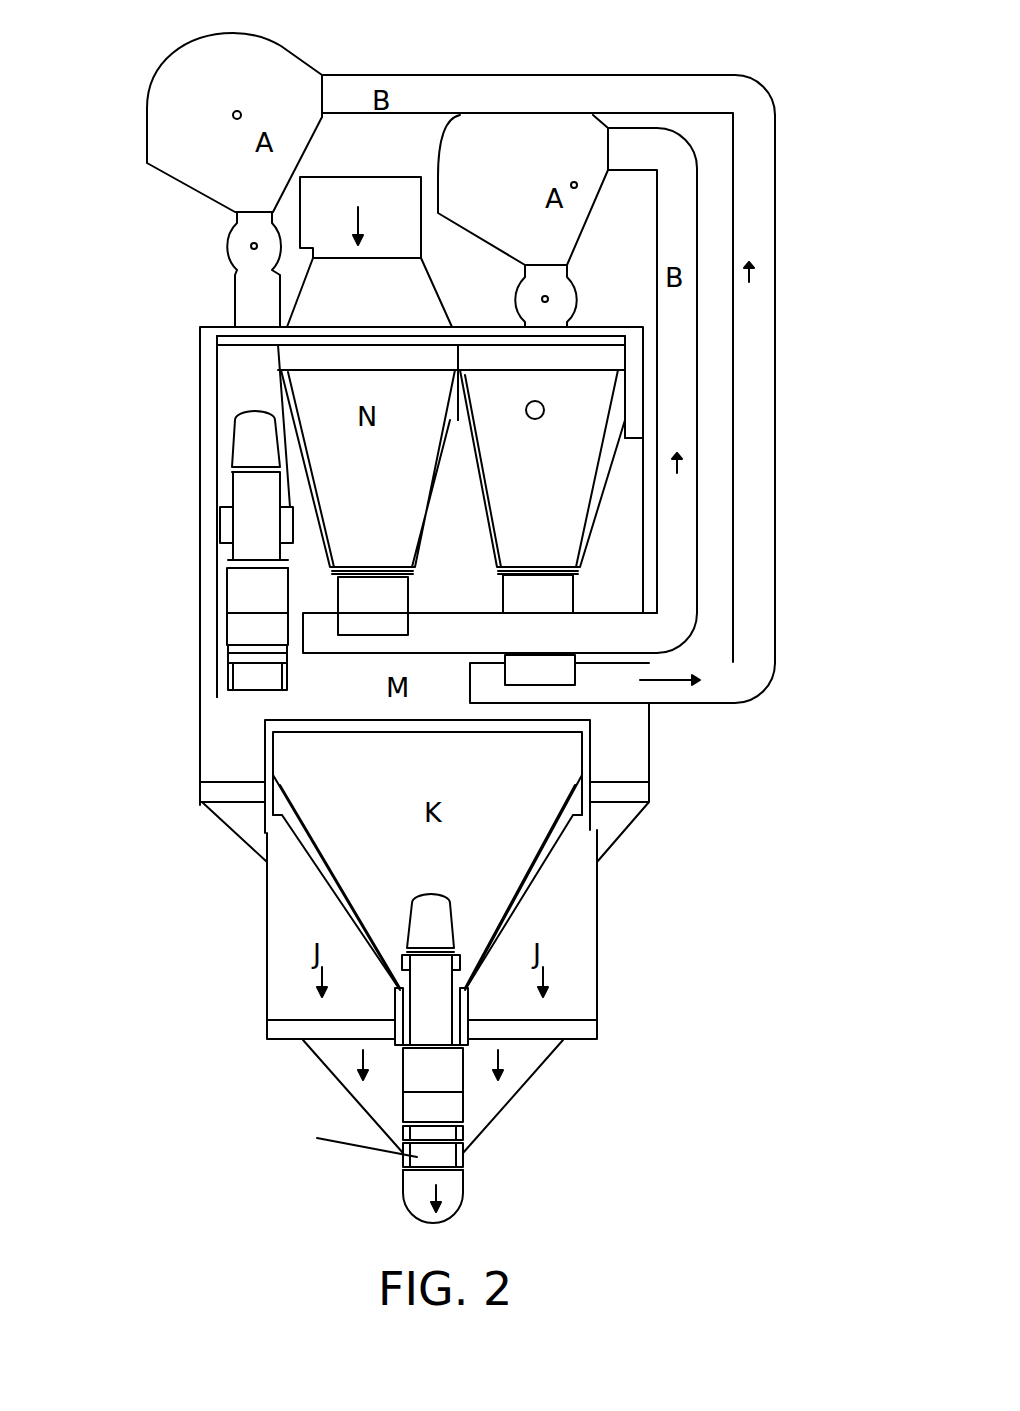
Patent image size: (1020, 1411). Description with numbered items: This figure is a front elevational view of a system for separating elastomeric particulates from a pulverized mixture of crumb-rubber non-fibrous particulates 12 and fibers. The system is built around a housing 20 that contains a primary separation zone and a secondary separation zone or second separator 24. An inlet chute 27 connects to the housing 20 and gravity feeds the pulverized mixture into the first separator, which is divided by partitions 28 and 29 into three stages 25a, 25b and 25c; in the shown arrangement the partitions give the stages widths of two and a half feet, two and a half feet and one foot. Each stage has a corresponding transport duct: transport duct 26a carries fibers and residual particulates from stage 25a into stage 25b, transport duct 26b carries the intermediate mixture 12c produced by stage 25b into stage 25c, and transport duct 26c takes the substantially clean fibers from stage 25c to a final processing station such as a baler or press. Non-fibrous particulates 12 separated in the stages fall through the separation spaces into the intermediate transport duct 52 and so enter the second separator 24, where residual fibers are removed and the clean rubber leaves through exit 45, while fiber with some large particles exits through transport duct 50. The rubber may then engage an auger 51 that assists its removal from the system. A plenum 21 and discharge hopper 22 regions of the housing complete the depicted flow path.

The non-fibrous particulates 12 is at (318, 968).
The intermediate mixture 12c is at (360, 592).
The housing 20 is at (208, 435).
The upper plenum 21 is at (645, 325).
The discharge hopper 22 is at (587, 1040).
The second separator 24 is at (302, 752).
The first stage 25a is at (403, 358).
The second stage 25b is at (582, 356).
The third stage 25c is at (237, 372).
The transport duct 26a is at (697, 192).
The transport duct 26b is at (775, 365).
The transport duct 26c is at (247, 492).
The inlet chute 27 is at (369, 252).
The partition 28 is at (277, 356).
The partition 29 is at (457, 380).
The exit 45 is at (307, 917).
The transport duct 50 is at (450, 1082).
The auger 51 is at (405, 1192).
The intermediate transport duct 52 is at (632, 500).